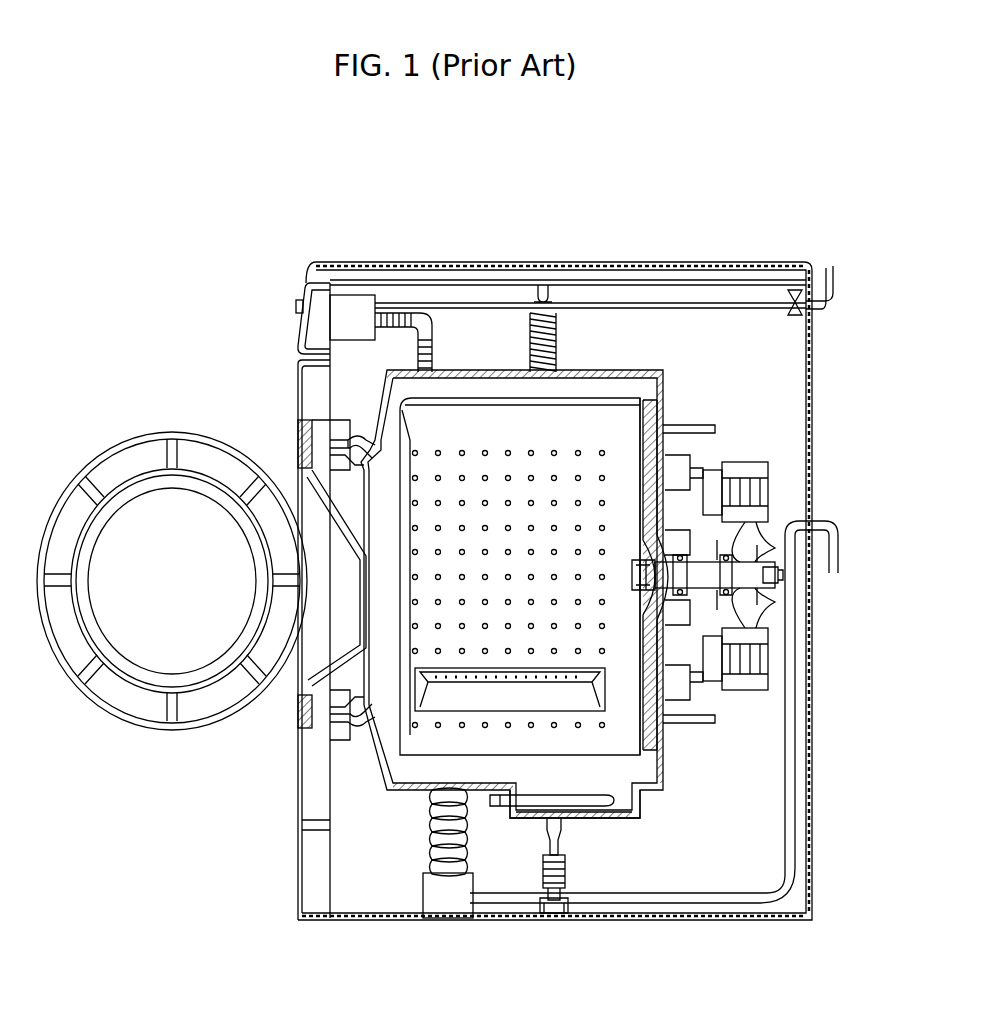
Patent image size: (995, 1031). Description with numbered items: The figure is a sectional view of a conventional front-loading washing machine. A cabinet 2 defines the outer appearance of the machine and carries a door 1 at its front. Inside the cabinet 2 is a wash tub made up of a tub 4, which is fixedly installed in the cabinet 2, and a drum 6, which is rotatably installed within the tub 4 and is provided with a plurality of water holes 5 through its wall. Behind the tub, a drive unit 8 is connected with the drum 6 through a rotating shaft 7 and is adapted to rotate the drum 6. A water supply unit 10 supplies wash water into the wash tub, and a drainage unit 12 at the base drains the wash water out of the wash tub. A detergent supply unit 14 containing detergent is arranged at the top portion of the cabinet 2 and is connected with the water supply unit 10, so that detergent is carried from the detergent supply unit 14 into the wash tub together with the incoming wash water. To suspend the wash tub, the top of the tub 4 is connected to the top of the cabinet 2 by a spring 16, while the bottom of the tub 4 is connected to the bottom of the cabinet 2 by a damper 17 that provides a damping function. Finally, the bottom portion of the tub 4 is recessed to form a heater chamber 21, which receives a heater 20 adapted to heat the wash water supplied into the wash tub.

The door 1 is at (160, 646).
The cabinet 2 is at (812, 388).
The tub 4 is at (388, 381).
The water holes 5 is at (412, 455).
The drum 6 is at (378, 417).
The rotating shaft 7 is at (702, 576).
The drive unit 8 is at (775, 489).
The water supply unit 10 is at (797, 306).
The drainage unit 12 is at (508, 893).
The detergent supply unit 14 is at (362, 298).
The spring 16 is at (558, 345).
The damper 17 is at (555, 872).
The heater 20 is at (617, 817).
The heater chamber 21 is at (632, 803).